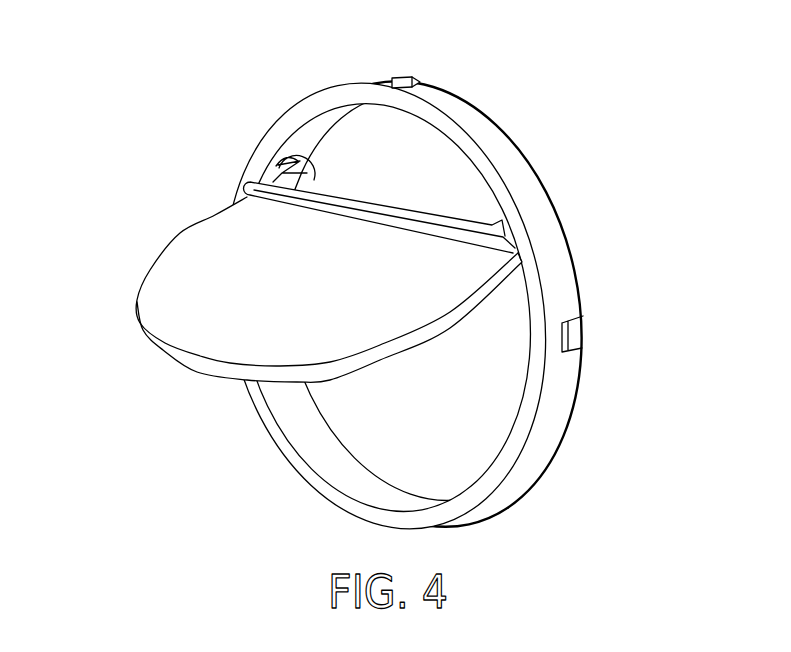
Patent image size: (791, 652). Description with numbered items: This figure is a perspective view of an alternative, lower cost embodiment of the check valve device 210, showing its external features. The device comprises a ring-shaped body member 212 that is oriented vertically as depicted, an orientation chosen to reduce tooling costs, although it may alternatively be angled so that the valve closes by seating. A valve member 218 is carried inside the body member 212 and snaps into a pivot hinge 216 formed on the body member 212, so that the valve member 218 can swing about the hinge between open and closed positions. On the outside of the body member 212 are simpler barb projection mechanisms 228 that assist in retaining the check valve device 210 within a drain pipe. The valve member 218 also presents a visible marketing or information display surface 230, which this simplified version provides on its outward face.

The check valve device 210 is at (356, 291).
The body member 212 is at (537, 167).
The pivot hinge 216 is at (277, 163).
The valve member 218 is at (316, 313).
The barb projection mechanism 228 is at (397, 77).
The information display surface 230 is at (210, 350).